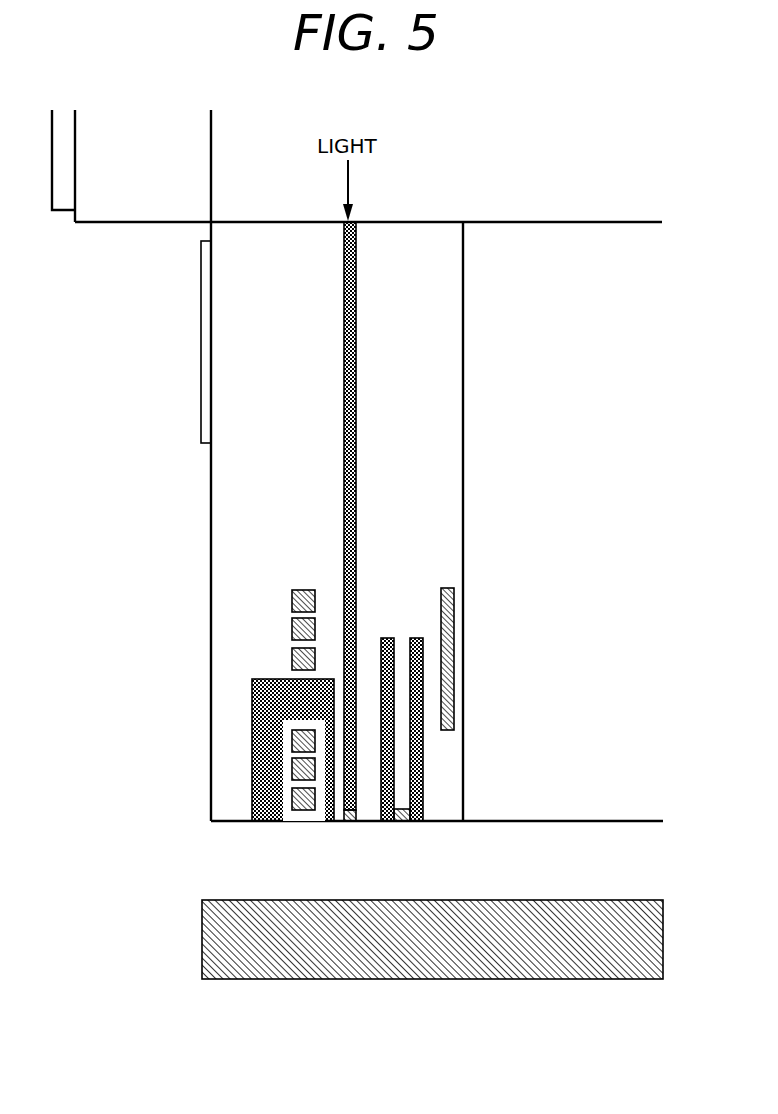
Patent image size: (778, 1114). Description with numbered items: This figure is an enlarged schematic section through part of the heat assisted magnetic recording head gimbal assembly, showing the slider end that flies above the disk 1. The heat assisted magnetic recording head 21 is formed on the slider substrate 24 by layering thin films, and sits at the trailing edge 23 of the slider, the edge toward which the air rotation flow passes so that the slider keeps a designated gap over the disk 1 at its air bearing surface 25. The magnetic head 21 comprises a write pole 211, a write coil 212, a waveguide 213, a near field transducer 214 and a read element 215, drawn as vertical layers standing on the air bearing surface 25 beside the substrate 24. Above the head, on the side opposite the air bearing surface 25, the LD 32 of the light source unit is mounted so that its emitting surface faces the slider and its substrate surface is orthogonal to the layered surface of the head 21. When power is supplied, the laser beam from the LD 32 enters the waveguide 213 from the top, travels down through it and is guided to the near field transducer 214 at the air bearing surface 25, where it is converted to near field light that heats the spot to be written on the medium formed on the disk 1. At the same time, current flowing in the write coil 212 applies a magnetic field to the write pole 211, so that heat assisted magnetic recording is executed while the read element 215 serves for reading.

The disk 1 is at (500, 955).
The heat assisted magnetic recording head 21 is at (235, 570).
The trailing edge 23 is at (210, 821).
The slider substrate 24 is at (538, 245).
The air bearing surface 25 is at (523, 821).
The LD 32 is at (220, 170).
The write pole 211 is at (330, 821).
The write coil 212 is at (293, 625).
The waveguide 213 is at (344, 312).
The near field transducer 214 is at (350, 821).
The read element 215 is at (402, 821).